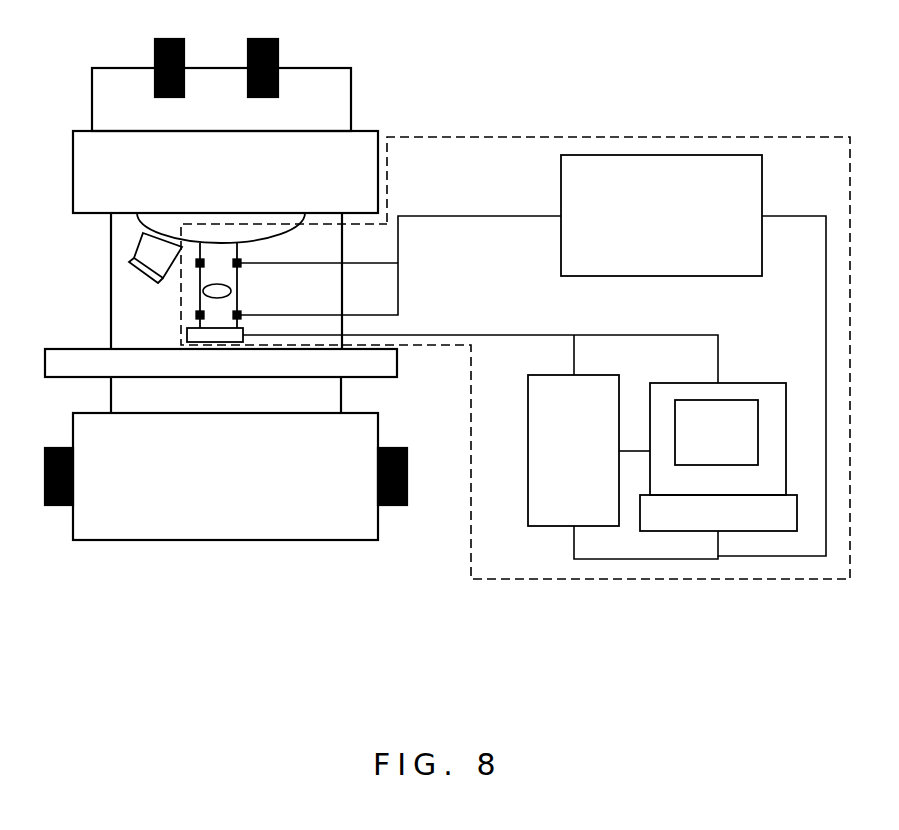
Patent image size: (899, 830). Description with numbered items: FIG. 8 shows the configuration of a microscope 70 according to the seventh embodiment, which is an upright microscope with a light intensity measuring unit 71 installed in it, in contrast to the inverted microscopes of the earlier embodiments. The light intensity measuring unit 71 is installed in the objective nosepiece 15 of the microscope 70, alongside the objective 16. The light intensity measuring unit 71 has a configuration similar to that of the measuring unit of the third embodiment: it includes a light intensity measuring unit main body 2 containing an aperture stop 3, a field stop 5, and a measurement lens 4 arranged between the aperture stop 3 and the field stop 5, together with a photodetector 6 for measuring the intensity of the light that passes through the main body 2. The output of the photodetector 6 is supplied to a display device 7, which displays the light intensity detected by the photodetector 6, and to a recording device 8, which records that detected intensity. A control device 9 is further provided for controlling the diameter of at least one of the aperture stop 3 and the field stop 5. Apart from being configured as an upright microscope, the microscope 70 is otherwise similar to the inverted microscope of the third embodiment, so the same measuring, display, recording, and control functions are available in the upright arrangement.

The microscope 70 is at (799, 30).
The light intensity measuring unit 71 is at (579, 134).
The objective nosepiece 15 is at (140, 221).
The objective 16 is at (135, 253).
The light intensity measuring unit main body 2 is at (198, 283).
The aperture stop 3 is at (240, 262).
The measurement lens 4 is at (222, 290).
The field stop 5 is at (240, 315).
The photodetector 6 is at (190, 335).
The display device 7 is at (745, 383).
The recording device 8 is at (528, 448).
The control device 9 is at (762, 198).